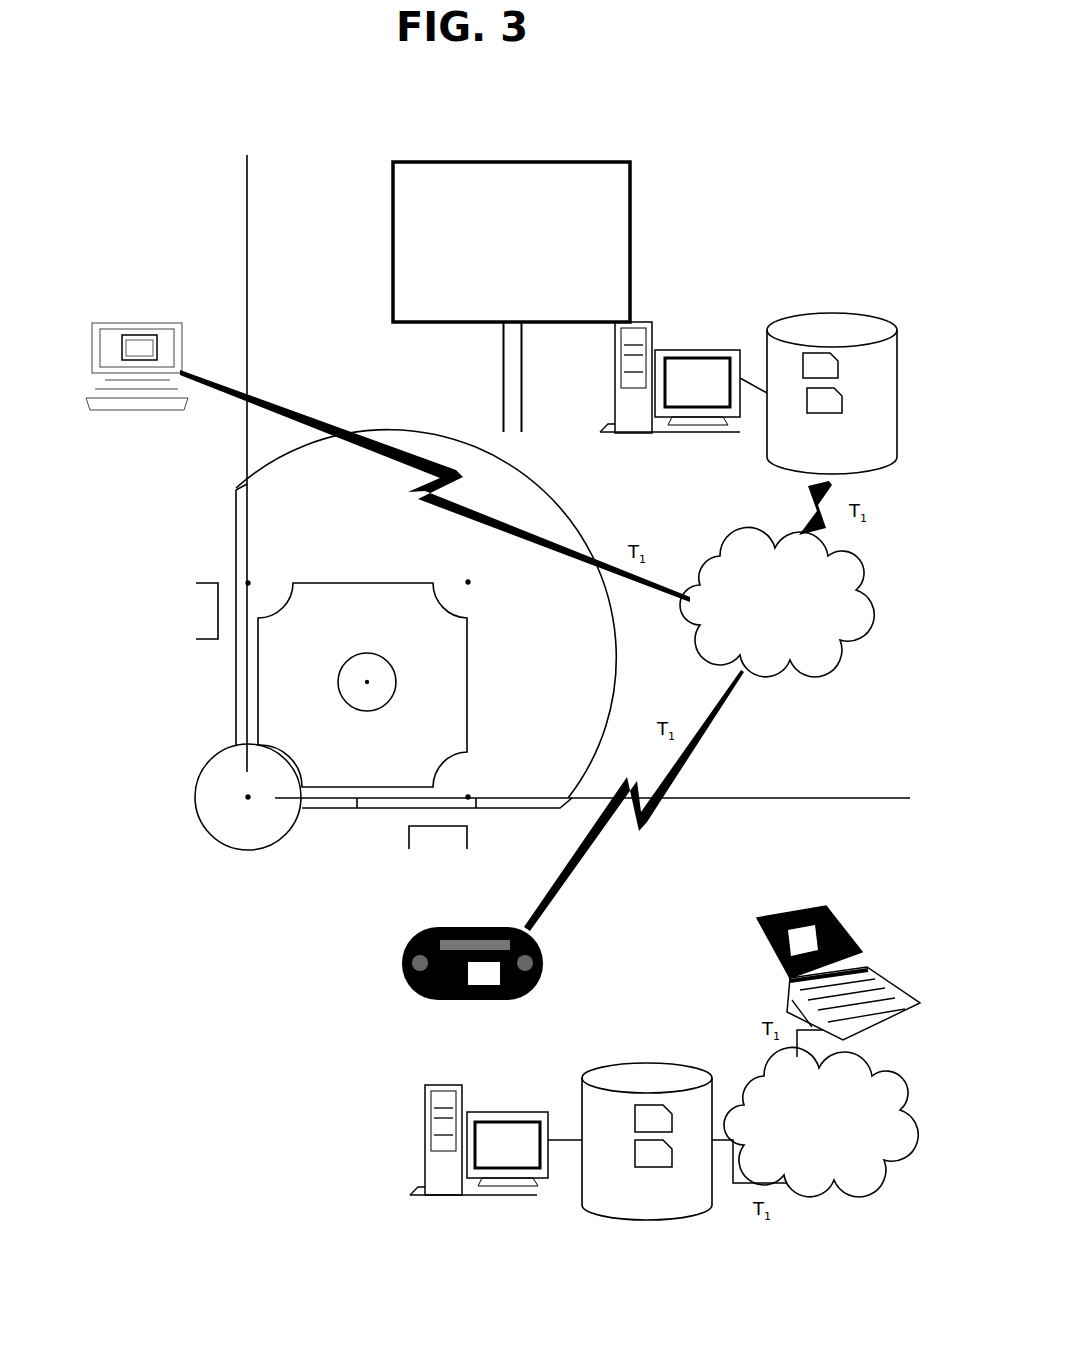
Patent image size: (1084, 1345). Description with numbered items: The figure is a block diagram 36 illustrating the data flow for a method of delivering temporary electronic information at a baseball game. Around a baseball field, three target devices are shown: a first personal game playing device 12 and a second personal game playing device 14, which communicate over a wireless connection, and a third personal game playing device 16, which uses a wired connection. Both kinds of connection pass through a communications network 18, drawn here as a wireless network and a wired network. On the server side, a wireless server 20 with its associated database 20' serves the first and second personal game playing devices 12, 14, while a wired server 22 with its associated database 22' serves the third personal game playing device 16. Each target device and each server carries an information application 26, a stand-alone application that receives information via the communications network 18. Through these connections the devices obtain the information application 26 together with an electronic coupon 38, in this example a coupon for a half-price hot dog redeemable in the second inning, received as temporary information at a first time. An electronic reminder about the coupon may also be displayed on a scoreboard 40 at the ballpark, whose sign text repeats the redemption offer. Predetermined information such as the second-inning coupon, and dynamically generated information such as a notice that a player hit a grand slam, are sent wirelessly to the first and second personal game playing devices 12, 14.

The target device 12 is at (537, 988).
The target device 14 is at (175, 350).
The target device 16 is at (830, 905).
The communications network 18 is at (857, 603).
The server device 20 is at (683, 368).
The database 20' is at (832, 369).
The server device 22 is at (496, 1131).
The database 22' is at (684, 1119).
The information application 26 is at (140, 413).
The block diagram 36 is at (720, 114).
The electronic coupon 38 is at (140, 338).
The scoreboard 40 is at (513, 160).